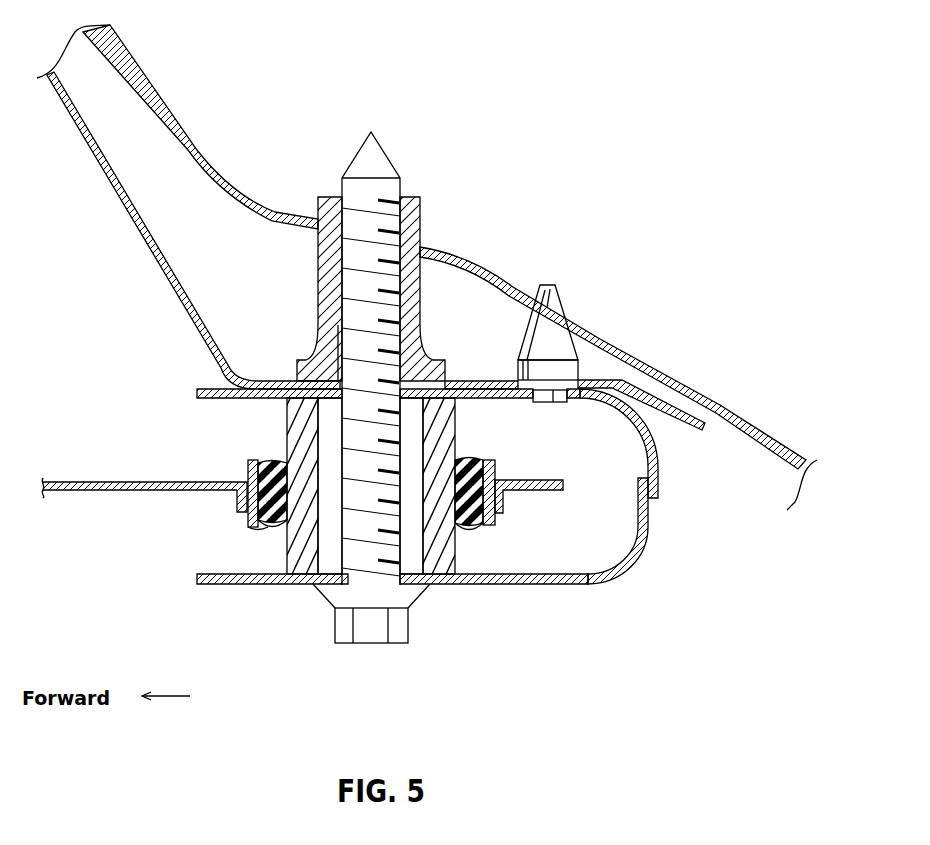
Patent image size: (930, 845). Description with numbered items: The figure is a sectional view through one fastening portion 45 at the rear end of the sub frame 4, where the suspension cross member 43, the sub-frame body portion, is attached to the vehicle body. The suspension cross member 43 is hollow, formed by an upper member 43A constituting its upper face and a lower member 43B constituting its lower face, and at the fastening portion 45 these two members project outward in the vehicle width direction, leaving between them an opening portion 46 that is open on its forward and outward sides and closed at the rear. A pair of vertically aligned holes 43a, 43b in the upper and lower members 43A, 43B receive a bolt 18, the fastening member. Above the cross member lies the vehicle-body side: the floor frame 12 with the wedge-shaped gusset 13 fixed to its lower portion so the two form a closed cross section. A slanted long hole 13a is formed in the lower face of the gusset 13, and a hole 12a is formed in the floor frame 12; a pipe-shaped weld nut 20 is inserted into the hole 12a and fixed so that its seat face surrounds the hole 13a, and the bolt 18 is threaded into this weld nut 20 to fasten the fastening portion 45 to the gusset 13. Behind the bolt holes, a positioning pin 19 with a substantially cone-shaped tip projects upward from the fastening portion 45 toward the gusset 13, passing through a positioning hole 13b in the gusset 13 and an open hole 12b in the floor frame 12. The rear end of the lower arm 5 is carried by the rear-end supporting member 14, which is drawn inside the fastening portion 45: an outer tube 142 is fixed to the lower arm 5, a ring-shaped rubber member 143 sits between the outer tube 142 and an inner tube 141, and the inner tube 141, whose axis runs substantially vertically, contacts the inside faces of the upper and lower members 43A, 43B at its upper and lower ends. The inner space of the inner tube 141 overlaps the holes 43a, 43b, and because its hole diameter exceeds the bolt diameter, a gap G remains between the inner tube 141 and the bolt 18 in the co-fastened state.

The sub frame 4 is at (548, 625).
The lower arm 5 is at (302, 509).
The floor frame 12 is at (427, 267).
The hole 12a is at (420, 243).
The open hole 12b is at (587, 323).
The gusset 13 is at (376, 261).
The hole 13a is at (326, 381).
The positioning hole 13b is at (553, 402).
The rear-end supporting member 14 is at (333, 486).
The inner tube 141 is at (287, 428).
The outer tube 142 is at (248, 522).
The ring-shaped rubber member 143 is at (268, 462).
The bolt 18 is at (373, 643).
The positioning pin 19 is at (552, 287).
The weld nut 20 is at (417, 197).
The suspension cross member 43 is at (467, 492).
The hole 43a is at (340, 389).
The hole 43b is at (348, 584).
The upper member 43A is at (661, 442).
The lower member 43B is at (648, 538).
The fastening portion 45 is at (453, 596).
The opening portion 46 is at (212, 527).
The gap G is at (411, 548).